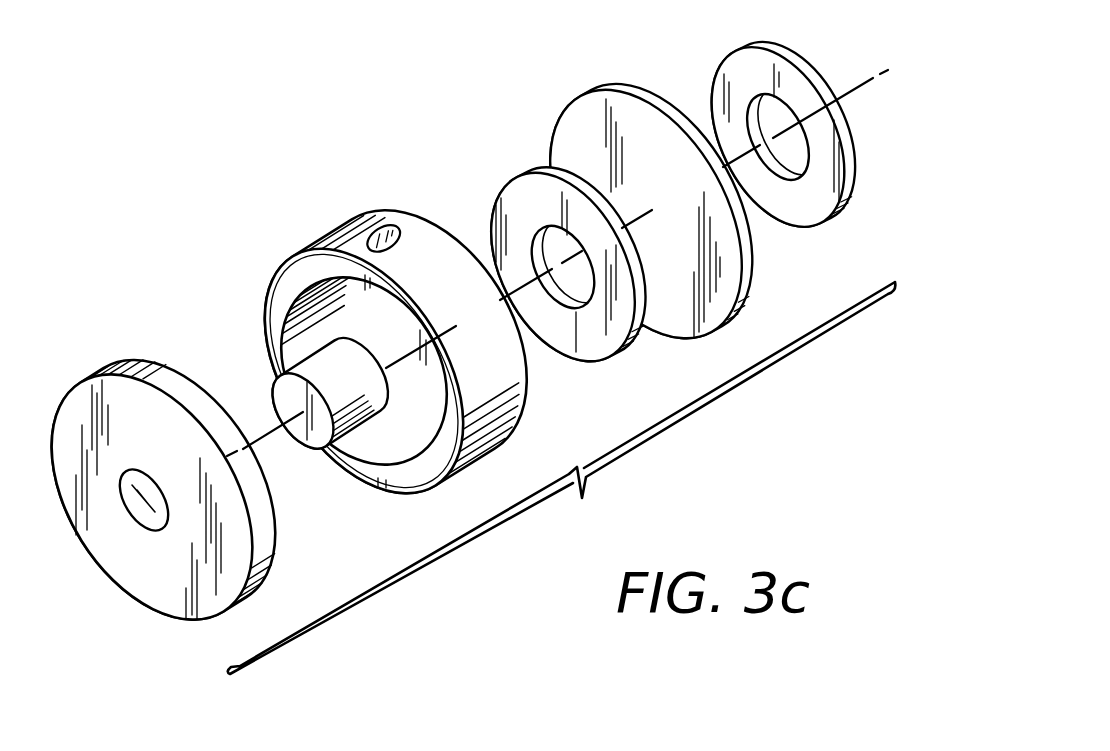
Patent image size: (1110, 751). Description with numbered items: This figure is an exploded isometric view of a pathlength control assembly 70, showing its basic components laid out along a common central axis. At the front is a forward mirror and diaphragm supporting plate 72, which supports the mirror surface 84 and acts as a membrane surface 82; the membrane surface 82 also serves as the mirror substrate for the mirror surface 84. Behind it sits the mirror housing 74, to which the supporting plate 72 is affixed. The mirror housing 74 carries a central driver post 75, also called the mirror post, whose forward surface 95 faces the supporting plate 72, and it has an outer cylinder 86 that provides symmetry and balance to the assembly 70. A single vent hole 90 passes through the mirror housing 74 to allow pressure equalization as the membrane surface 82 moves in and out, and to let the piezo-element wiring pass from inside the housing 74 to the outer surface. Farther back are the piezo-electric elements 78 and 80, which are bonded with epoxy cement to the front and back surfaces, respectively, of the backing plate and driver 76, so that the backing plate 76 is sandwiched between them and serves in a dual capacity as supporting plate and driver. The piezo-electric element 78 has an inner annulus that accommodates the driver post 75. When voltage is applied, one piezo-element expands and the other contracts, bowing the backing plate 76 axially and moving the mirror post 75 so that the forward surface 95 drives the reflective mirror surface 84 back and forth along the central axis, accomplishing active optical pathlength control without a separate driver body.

The pathlength control assembly 70 is at (562, 478).
The forward mirror and diaphragm supporting plate 72 is at (270, 553).
The mirror housing 74 is at (288, 251).
The driver post 75 is at (330, 372).
The backing plate and driver 76 is at (586, 110).
The piezo-electric element 78 is at (520, 186).
The piezo-electric element 80 is at (742, 70).
The membrane surface 82 is at (168, 590).
The mirror surface 84 is at (140, 512).
The outer cylinder 86 is at (500, 370).
The vent hole 90 is at (388, 237).
The forward surface 95 is at (318, 437).